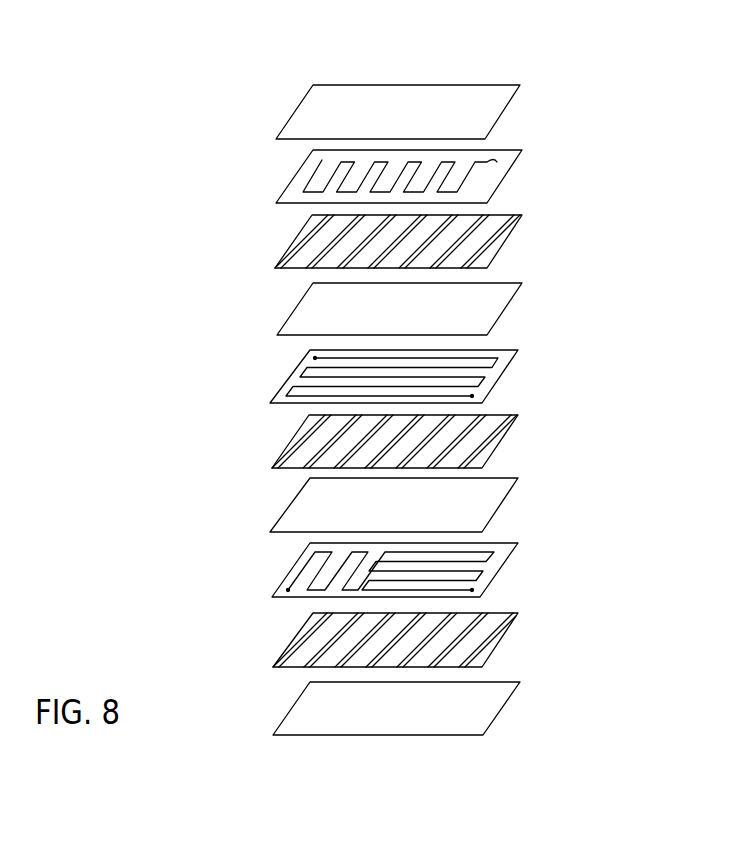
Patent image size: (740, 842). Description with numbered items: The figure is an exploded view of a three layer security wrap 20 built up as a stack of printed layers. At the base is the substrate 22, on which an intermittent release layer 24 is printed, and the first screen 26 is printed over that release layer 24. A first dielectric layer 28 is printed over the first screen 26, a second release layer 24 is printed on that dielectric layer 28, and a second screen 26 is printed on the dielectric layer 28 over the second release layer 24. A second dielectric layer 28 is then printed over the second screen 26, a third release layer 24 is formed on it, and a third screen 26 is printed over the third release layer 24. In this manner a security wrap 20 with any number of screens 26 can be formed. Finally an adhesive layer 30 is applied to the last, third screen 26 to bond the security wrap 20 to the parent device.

The security wrap 20 is at (160, 129).
The substrate 22 is at (482, 700).
The release layer 24 is at (485, 238).
The screen 26 is at (485, 178).
The dielectric layer 28 is at (488, 307).
The adhesive layer 30 is at (487, 108).